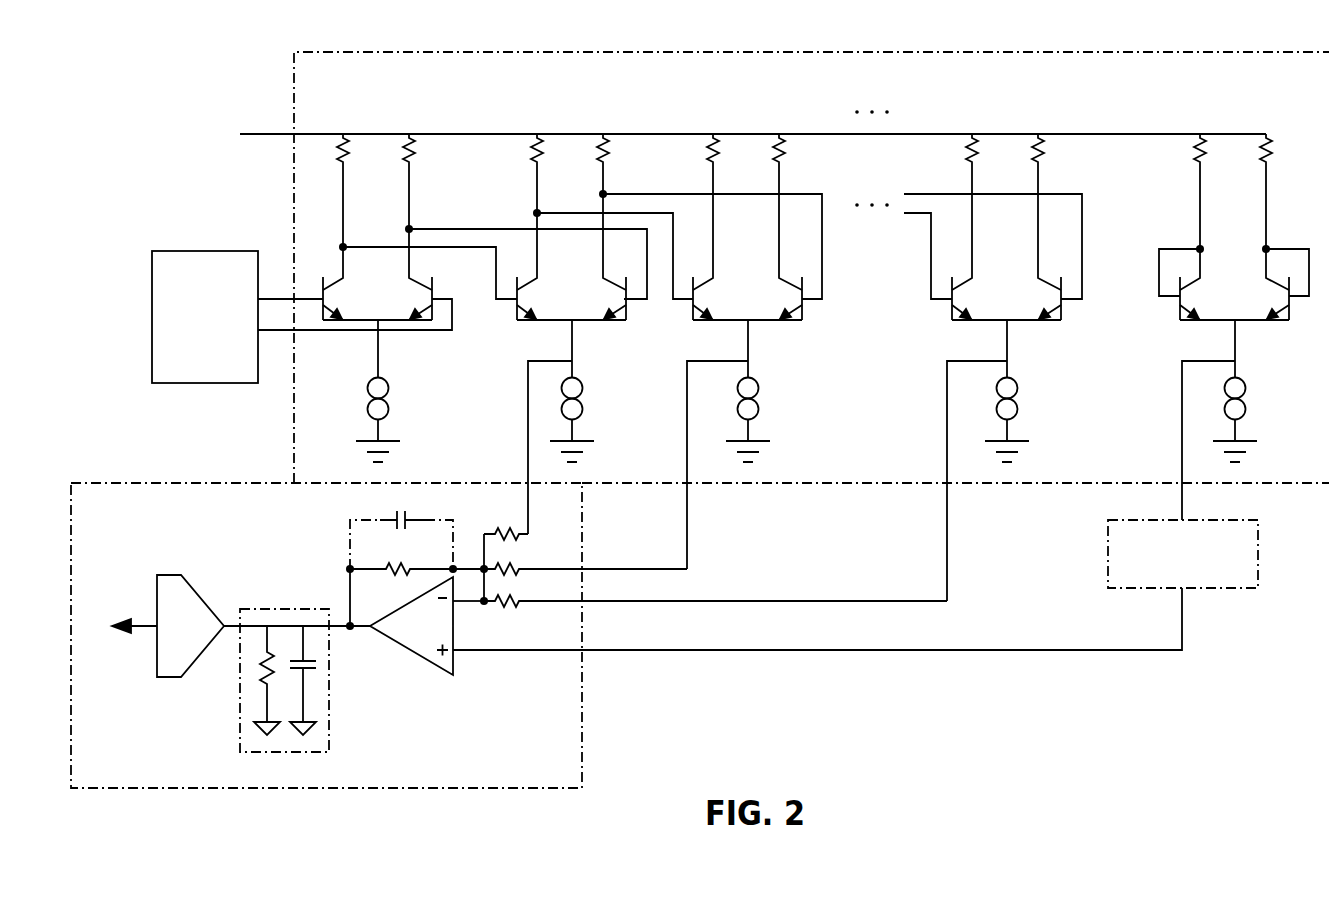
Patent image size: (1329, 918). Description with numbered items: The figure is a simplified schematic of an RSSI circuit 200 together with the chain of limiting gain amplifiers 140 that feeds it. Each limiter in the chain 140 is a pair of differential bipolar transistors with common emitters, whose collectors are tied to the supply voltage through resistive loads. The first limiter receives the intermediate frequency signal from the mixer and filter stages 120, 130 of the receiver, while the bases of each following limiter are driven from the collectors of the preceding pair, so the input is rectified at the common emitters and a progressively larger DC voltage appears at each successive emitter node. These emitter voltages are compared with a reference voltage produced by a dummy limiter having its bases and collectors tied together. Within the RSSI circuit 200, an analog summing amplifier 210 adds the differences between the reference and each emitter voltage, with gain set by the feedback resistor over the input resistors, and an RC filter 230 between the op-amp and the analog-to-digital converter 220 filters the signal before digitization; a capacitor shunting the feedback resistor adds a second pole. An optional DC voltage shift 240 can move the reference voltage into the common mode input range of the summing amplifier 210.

The chain of limiting gain amplifiers 140 is at (344, 48).
The mixer stage 120 is at (178, 298).
The filter stage 130 is at (204, 246).
The RSSI circuit 200 is at (137, 479).
The analog summing amplifier 210 is at (437, 637).
The analog-to-digital converter 220 is at (172, 568).
The RC filter 230 is at (262, 603).
The optional DC voltage shift 240 is at (1265, 553).